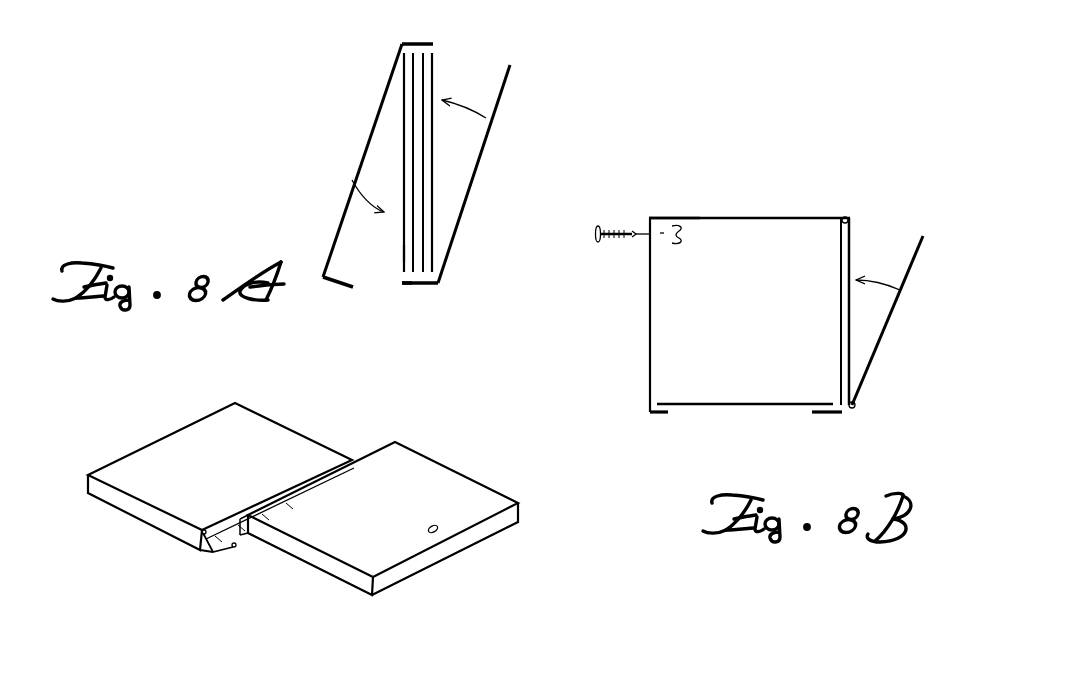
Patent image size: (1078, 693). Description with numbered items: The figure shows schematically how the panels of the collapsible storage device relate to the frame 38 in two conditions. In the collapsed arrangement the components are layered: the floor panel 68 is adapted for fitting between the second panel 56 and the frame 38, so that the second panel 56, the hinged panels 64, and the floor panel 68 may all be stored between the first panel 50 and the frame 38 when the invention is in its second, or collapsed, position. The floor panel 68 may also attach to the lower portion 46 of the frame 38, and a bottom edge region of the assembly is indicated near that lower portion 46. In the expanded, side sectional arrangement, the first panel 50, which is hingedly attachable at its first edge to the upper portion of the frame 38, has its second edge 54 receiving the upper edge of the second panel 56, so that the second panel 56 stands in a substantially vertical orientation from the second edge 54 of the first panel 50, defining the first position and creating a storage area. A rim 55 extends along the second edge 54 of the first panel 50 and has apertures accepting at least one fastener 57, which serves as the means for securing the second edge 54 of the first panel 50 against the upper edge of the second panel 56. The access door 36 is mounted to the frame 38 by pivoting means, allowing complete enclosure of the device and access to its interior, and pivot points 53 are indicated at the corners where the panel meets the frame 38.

In FIG. 8A, the access door 36 is at (487, 148).
In FIG. 8B, the access door 36 is at (888, 338).
In FIG. 8A, the frame 38 is at (420, 43).
In FIG. 8B, the frame 38 is at (851, 259).
In FIG. 8A, the lower portion 46 is at (401, 284).
In FIG. 8A, the first panel 50 is at (358, 158).
In FIG. 8B, the first panel 50 is at (774, 218).
In FIG. 8B, the pivot pin 53 is at (845, 218).
In FIG. 8B, the second edge 54 is at (649, 217).
In FIG. 8B, the rim 55 is at (649, 242).
In FIG. 8A, the second panel 56 is at (402, 254).
In FIG. 8B, the fastener 57 is at (596, 233).
In FIG. 8A, the hinged panels 64 is at (423, 276).
In FIG. 8A, the floor panel 68 is at (435, 68).
In FIG. 8B, the floor panel 68 is at (771, 405).